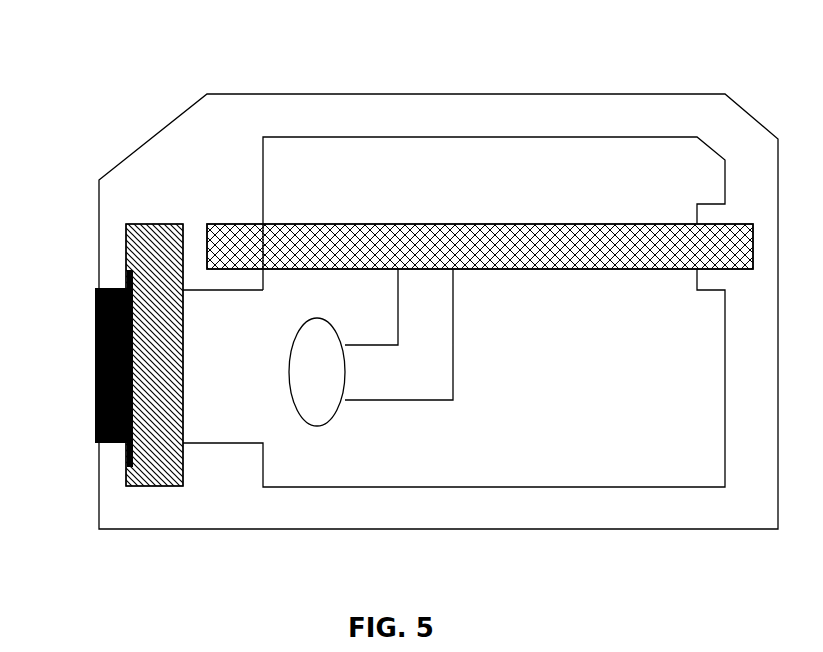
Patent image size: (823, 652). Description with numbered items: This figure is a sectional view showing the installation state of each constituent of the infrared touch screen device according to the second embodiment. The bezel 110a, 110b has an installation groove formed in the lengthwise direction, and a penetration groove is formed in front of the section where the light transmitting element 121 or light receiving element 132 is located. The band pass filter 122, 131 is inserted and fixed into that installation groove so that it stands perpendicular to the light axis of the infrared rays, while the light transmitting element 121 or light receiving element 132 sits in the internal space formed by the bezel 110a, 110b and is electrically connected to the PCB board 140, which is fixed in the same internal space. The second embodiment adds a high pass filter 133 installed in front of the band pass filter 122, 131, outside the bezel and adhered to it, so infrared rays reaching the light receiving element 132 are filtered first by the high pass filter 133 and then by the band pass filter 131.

The bezel 110a is at (438, 277).
The bezel 110b is at (255, 123).
The PCB board 140 is at (430, 240).
The high pass filter 133 is at (95, 340).
The band pass filter 122 is at (149, 408).
The band pass filter 131 is at (162, 487).
The light transmitting element 121 is at (381, 448).
The light receiving element 132 is at (322, 400).